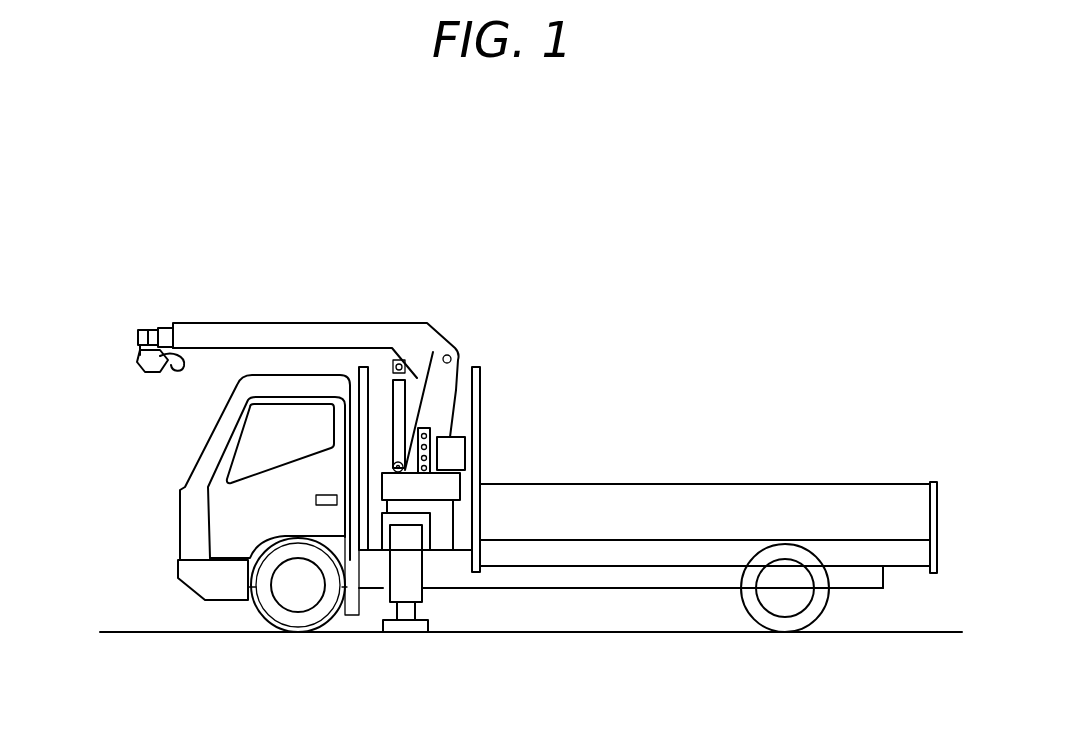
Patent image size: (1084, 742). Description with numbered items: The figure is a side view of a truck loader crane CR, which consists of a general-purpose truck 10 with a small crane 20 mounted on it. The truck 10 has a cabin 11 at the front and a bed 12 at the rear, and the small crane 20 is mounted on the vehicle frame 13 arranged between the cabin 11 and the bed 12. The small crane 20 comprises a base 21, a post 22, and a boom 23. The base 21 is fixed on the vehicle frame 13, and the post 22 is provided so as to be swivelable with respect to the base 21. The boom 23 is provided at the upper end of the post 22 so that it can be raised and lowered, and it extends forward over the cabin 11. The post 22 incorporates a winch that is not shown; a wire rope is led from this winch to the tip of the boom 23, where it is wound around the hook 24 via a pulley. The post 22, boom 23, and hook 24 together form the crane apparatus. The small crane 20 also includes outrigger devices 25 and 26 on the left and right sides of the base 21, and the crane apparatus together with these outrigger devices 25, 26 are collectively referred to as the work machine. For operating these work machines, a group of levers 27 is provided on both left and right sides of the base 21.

The truck loader crane CR is at (807, 200).
The general-purpose truck 10 is at (742, 457).
The cabin 11 is at (193, 530).
The bed 12 is at (672, 503).
The vehicle frame 13 is at (608, 577).
The small crane 20 is at (232, 292).
The base 21 is at (443, 537).
The post 22 is at (436, 352).
The boom 23 is at (350, 335).
The hook 24 is at (147, 370).
The outrigger device 25 is at (402, 577).
The outrigger device 26 is at (405, 617).
The group of levers 27 is at (433, 433).